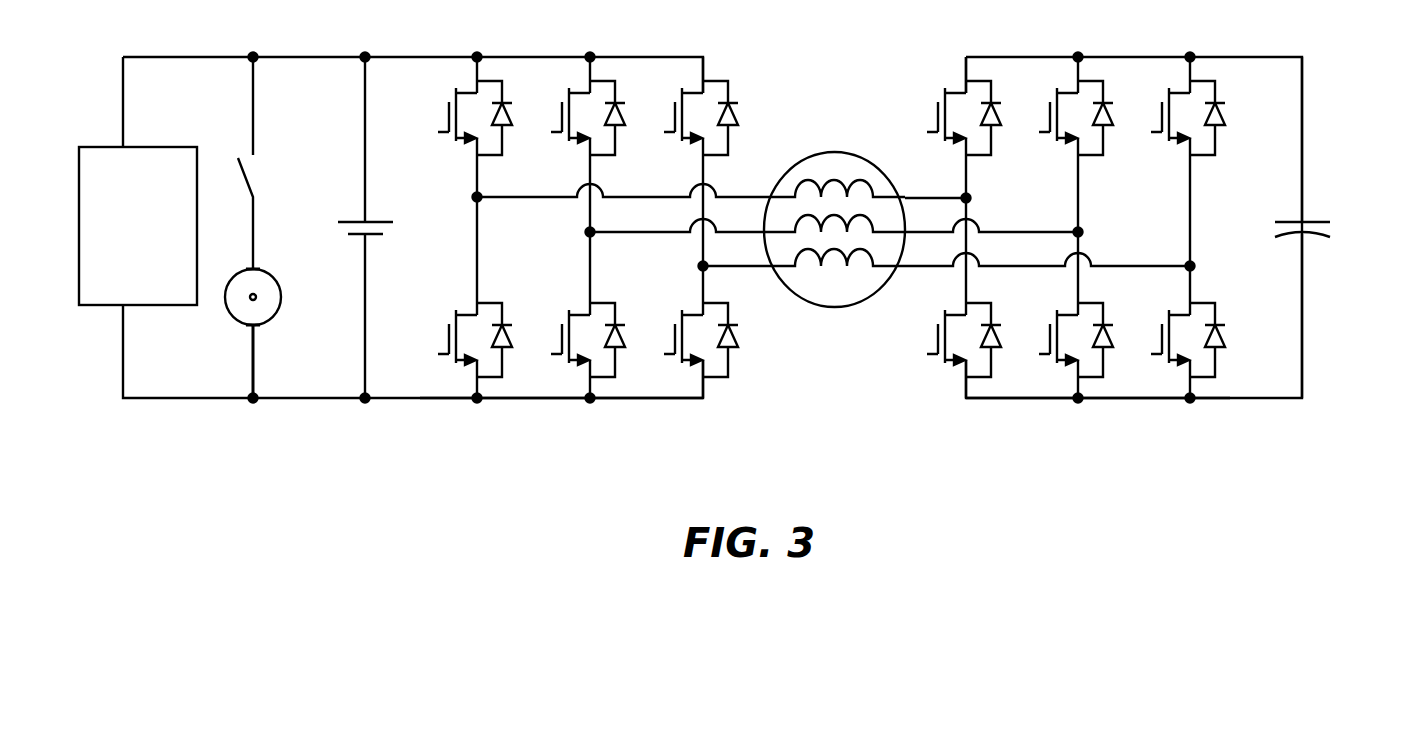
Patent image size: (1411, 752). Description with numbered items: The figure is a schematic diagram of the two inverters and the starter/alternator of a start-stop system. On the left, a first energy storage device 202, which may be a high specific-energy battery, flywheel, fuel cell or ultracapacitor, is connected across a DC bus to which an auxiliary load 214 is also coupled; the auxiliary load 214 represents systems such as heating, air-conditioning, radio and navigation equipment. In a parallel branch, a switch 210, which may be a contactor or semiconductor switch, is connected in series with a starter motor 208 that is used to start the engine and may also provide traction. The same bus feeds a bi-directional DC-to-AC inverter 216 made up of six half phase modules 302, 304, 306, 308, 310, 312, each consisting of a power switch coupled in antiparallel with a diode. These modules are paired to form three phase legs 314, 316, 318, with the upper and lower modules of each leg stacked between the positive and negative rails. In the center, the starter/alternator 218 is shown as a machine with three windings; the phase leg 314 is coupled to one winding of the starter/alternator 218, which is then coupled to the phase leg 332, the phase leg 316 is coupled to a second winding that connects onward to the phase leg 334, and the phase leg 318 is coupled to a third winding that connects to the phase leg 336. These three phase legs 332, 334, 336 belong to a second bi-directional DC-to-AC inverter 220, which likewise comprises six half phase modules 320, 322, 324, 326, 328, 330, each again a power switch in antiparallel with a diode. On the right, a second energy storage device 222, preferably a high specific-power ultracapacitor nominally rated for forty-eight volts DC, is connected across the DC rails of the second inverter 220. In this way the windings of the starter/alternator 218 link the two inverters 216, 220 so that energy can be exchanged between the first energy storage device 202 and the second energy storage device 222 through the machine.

The first energy storage device 202 is at (378, 218).
The starter motor 208 is at (289, 313).
The switch 210 is at (247, 178).
The auxiliary load 214 is at (162, 282).
The bi-directional DC-to-AC inverter 216 is at (608, 232).
The starter/alternator 218 is at (822, 140).
The second bi-directional DC-to-AC inverter 220 is at (1095, 232).
The second energy storage device 222 is at (1315, 219).
The half phase module 302 is at (466, 179).
The half phase module 304 is at (466, 299).
The half phase module 306 is at (578, 179).
The half phase module 308 is at (578, 299).
The half phase module 310 is at (689, 179).
The half phase module 312 is at (689, 299).
The phase leg 314 is at (484, 42).
The phase leg 316 is at (596, 42).
The phase leg 318 is at (709, 42).
The half phase module 320 is at (954, 179).
The half phase module 322 is at (954, 299).
The half phase module 324 is at (1065, 179).
The half phase module 326 is at (1065, 299).
The half phase module 328 is at (1177, 179).
The half phase module 330 is at (1177, 299).
The phase leg 332 is at (972, 42).
The phase leg 334 is at (1084, 42).
The phase leg 336 is at (1196, 42).